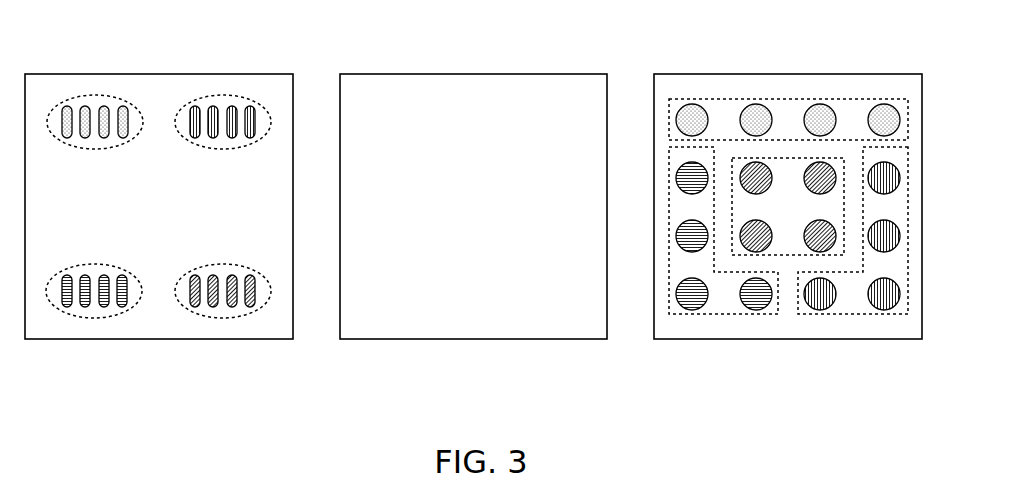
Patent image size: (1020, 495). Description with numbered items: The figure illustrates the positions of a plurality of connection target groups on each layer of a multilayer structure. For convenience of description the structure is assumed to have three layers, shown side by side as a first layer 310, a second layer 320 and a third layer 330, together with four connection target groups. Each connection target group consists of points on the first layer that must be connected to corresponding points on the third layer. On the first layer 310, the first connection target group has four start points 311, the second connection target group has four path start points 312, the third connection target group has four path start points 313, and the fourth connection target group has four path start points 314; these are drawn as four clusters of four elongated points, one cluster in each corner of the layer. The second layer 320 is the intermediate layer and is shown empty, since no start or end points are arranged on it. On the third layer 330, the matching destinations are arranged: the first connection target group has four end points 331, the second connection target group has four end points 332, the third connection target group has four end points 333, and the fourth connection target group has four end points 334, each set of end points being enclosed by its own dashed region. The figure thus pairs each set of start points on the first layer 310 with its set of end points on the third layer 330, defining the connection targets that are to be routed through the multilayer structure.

The Layer 1 310 is at (245, 74).
The start points 311 is at (98, 96).
The path start points 312 is at (222, 96).
The path start points 313 is at (92, 318).
The path start points 314 is at (222, 318).
The Layer 2 320 is at (559, 74).
The Layer 3 330 is at (873, 74).
The end points 331 is at (735, 99).
The end points 332 is at (870, 314).
The end points 333 is at (698, 314).
The end points 334 is at (792, 158).